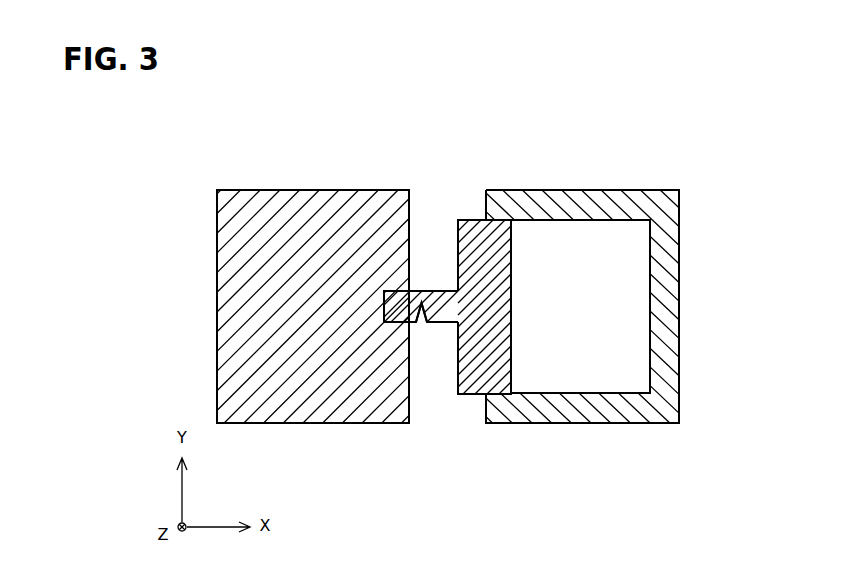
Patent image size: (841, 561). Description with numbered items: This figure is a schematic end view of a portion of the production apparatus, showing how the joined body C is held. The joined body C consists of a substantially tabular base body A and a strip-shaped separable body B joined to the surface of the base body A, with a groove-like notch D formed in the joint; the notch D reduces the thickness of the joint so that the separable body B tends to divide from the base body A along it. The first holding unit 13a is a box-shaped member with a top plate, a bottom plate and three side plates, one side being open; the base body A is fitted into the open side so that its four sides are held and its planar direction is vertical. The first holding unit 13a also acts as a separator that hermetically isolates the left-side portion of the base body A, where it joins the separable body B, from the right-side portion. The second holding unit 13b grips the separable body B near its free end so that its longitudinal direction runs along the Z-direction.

The first holding unit 13a is at (581, 195).
The second holding unit 13b is at (308, 198).
The base body A is at (472, 228).
The separable body B is at (397, 290).
The joined body C is at (466, 396).
The notch D is at (421, 327).